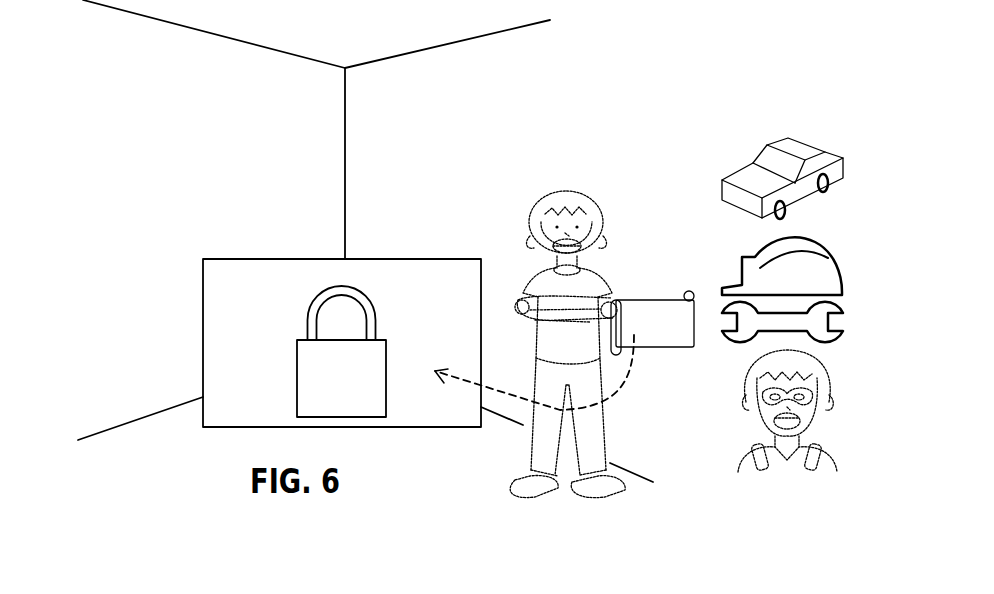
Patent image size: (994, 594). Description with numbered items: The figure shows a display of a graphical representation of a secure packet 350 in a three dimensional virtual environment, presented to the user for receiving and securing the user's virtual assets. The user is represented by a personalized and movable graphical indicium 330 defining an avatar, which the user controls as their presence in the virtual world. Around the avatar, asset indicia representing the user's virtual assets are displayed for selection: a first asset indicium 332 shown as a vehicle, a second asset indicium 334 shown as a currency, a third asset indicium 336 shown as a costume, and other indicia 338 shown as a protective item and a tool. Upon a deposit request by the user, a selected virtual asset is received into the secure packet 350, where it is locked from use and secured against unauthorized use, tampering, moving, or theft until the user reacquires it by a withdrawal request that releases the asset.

The graphical indicium 330 is at (562, 198).
The first asset indicium 332 is at (838, 173).
The second asset indicium 334 is at (673, 313).
The third asset indicium 336 is at (803, 398).
The other indicia 338 is at (853, 295).
The secure packet 350 is at (442, 259).